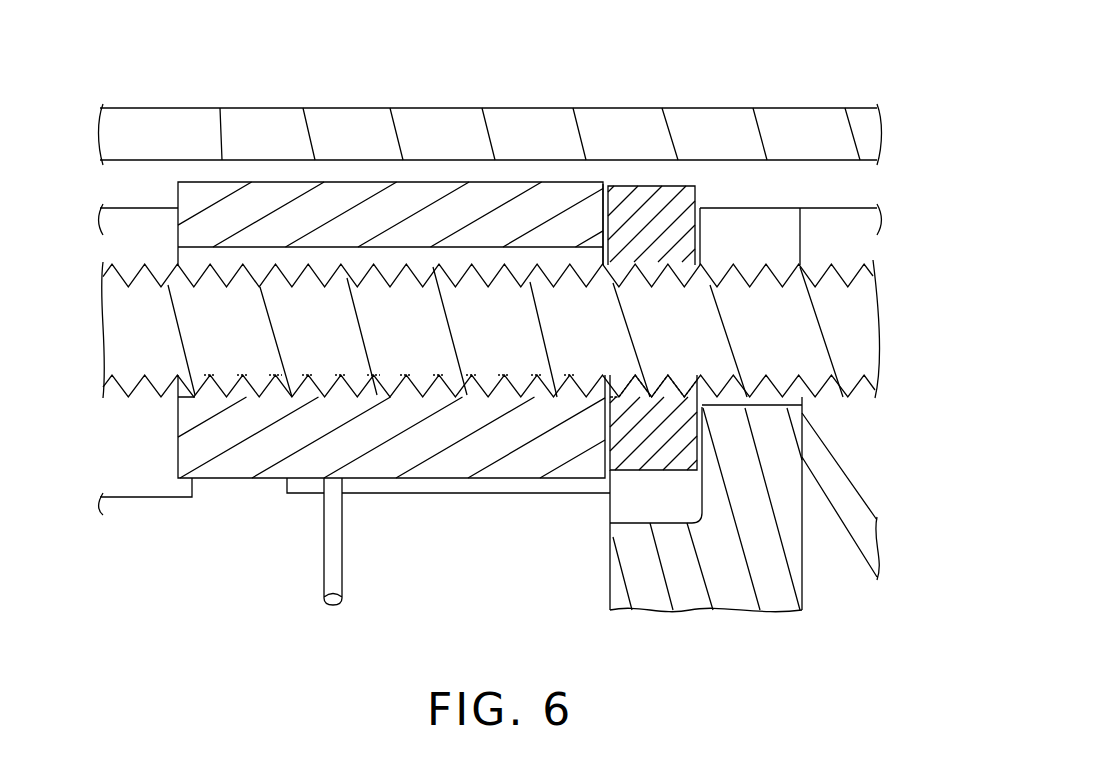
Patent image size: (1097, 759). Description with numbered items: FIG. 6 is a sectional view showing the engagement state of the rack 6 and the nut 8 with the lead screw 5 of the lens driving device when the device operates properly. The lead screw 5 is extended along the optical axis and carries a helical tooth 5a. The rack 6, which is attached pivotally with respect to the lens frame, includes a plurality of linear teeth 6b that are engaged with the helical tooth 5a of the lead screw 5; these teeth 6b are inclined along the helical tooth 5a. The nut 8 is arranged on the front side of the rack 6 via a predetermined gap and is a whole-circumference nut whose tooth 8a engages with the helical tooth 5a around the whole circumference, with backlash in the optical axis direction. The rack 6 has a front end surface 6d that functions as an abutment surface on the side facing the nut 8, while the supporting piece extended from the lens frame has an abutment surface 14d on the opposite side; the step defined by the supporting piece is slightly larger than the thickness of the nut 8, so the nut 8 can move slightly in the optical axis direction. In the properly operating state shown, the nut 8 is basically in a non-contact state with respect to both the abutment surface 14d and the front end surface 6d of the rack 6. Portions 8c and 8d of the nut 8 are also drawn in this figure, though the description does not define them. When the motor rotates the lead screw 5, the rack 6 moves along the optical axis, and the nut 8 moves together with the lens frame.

The lead screw 5 is at (860, 332).
The helical tooth 5a is at (404, 268).
The rack 6 is at (228, 460).
The teeth 6b is at (247, 383).
The front end surface 6d is at (613, 228).
The nut 8 is at (633, 460).
The tooth 8a is at (665, 373).
The stopper nut upper portion 8c is at (607, 217).
The flange of stopper nut 8d is at (697, 222).
The abutment surface 14d is at (697, 448).